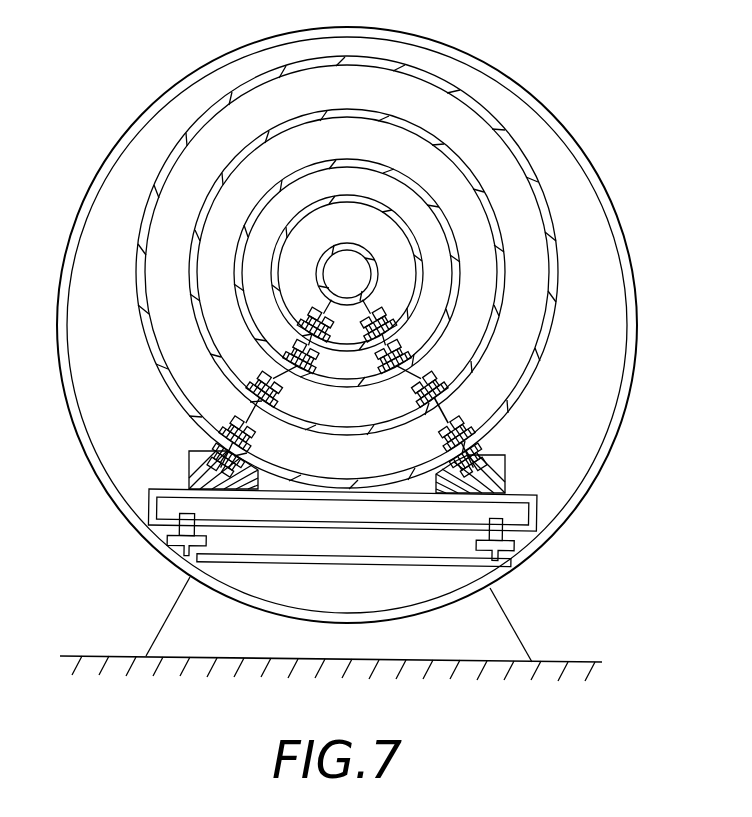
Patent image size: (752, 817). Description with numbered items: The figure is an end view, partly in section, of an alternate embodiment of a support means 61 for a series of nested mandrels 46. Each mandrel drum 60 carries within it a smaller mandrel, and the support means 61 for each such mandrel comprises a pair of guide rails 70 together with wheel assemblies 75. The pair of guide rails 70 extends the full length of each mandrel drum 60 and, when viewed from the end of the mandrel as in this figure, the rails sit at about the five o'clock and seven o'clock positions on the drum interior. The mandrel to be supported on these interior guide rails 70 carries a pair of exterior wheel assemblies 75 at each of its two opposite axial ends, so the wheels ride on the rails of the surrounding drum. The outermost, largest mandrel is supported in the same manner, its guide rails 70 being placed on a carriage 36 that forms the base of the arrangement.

The mandrel 46 is at (135, 207).
The mandrel drum 60 is at (517, 165).
The support means 61 is at (210, 392).
The wheel assembly 75 is at (452, 424).
The guide rail 70 is at (189, 465).
The carriage 36 is at (537, 515).